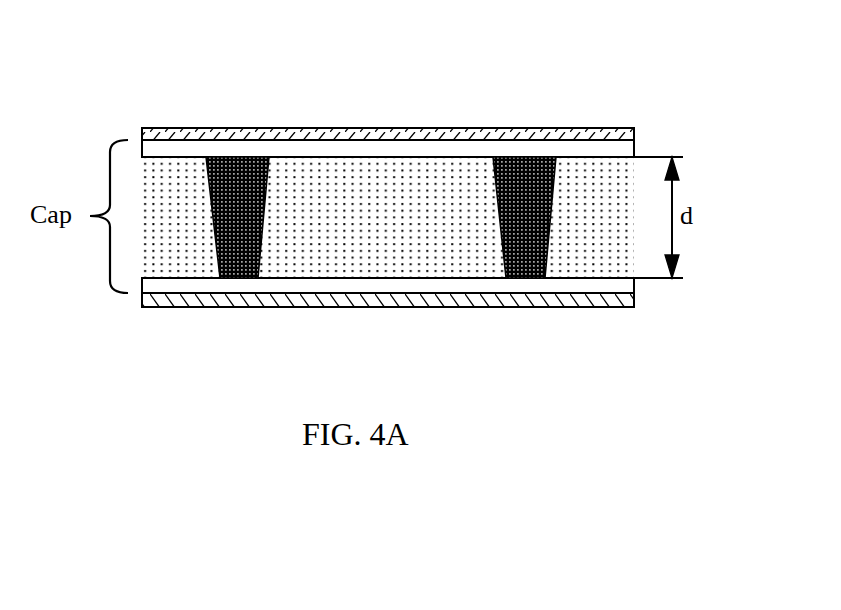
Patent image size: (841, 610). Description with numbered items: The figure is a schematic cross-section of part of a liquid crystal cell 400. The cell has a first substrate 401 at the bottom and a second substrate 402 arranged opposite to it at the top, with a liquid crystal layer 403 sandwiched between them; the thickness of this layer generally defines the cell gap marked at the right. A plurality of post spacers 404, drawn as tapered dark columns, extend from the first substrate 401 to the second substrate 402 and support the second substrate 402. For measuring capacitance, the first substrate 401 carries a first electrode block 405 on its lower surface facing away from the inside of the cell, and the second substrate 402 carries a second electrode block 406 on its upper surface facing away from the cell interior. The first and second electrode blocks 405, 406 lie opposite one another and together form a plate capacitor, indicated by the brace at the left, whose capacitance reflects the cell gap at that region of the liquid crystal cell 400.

The liquid crystal cell 400 is at (162, 22).
The first substrate 401 is at (613, 288).
The second substrate 402 is at (615, 148).
The liquid crystal layer 403 is at (363, 245).
The post spacers 404 is at (245, 187).
The first electrode block 405 is at (460, 300).
The second electrode block 406 is at (430, 135).